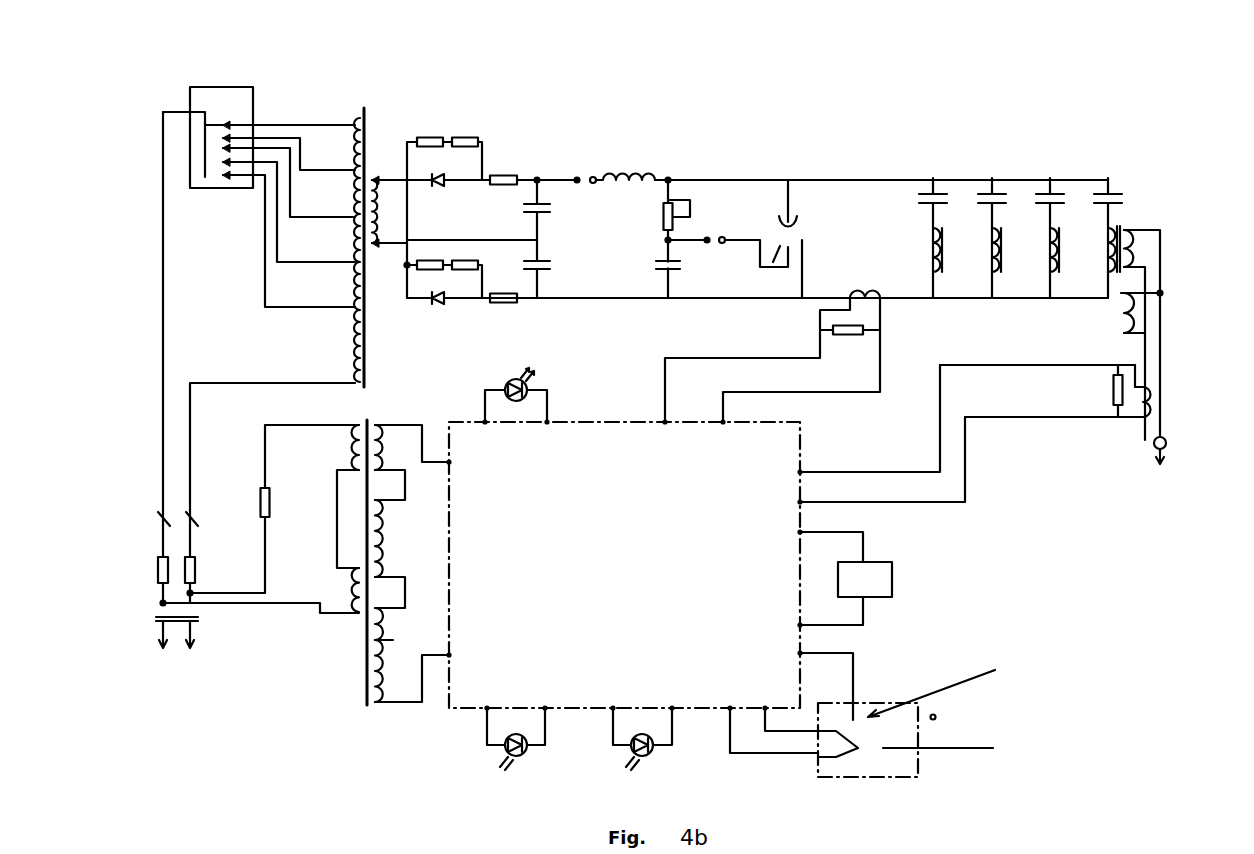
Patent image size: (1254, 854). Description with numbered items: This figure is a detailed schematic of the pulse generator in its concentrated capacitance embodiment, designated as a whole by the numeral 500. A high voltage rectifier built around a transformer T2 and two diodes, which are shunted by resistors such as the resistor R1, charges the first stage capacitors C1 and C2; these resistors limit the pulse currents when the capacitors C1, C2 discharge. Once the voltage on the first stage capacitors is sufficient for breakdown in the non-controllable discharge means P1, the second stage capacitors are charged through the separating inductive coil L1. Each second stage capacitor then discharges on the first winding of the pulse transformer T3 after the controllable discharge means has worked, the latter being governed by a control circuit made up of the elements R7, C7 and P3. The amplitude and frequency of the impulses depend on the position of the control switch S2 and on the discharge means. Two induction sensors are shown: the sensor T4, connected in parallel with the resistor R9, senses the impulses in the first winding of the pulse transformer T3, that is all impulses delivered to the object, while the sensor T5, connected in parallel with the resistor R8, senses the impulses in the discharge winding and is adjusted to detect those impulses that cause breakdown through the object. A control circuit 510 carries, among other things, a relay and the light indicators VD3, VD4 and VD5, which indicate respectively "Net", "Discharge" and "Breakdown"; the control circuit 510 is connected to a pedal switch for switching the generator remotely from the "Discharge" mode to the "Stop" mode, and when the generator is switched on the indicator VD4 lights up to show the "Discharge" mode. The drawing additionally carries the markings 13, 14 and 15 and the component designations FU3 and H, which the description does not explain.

The pulse generator schematic 500 is at (842, 146).
The control circuit 510 is at (624, 564).
The transformer T2 is at (372, 241).
The pulse transformer T3 is at (371, 551).
The induction sensor T4 is at (1142, 325).
The induction sensor T5 is at (865, 285).
The probe coil 13 is at (1131, 399).
The secondary terminal 14 is at (389, 238).
The secondary terminal 15 is at (389, 175).
The control switch S2 is at (272, 189).
The fuse FU3 is at (274, 509).
The first stage capacitor C1 is at (542, 210).
The first stage capacitor C2 is at (542, 269).
The control circuit capacitor C7 is at (672, 266).
The control circuit resistor R7 is at (685, 211).
The resistor R8 is at (850, 337).
The resistor R9 is at (1109, 391).
The resistor R1 is at (855, 578).
The separating inductive coil L1 is at (625, 169).
The non-controllable discharge means P1 is at (586, 172).
The control circuit element P3 is at (715, 232).
The switch H is at (794, 239).
The light indicator VD3 is at (504, 395).
The light indicator VD4 is at (535, 739).
The light indicator VD5 is at (663, 739).